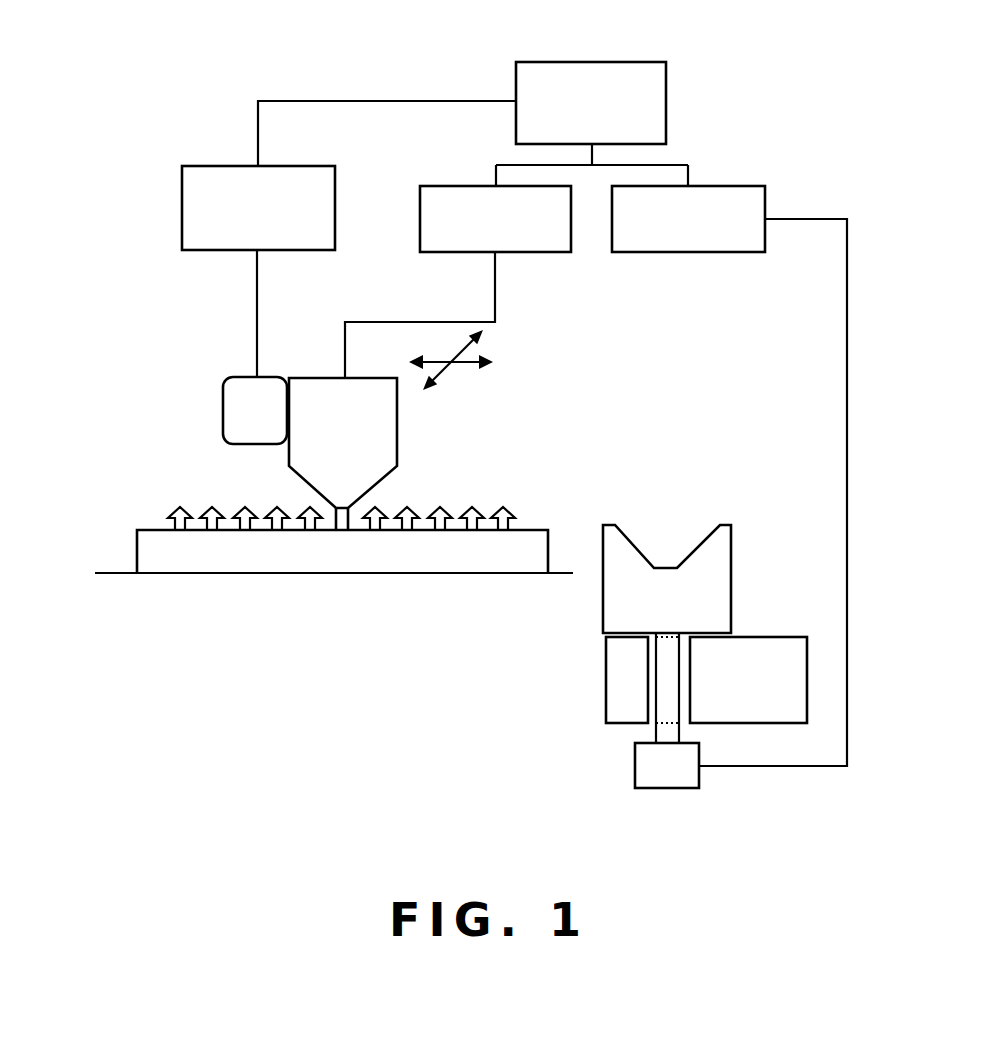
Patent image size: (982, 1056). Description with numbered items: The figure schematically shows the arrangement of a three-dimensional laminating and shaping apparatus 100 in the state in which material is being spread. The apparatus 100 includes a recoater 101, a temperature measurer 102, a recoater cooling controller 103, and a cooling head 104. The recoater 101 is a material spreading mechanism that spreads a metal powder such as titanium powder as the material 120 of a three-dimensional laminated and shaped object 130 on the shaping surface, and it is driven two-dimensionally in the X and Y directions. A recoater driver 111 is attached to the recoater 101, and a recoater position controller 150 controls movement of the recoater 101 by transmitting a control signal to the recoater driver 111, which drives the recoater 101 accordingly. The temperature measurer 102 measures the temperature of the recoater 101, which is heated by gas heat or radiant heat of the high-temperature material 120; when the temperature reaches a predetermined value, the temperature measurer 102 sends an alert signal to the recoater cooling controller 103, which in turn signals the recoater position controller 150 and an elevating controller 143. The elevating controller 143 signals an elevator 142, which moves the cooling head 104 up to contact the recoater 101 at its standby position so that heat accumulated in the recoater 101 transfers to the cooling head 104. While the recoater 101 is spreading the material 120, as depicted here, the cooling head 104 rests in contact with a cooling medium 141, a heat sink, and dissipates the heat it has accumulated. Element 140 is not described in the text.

The three-dimensional laminating and shaping apparatus 100 is at (151, 76).
The recoater 101 is at (397, 414).
The temperature measurer 102 is at (457, 186).
The recoater cooling controller 103 is at (591, 62).
The cooling head 104 is at (731, 573).
The recoater driver 111 is at (223, 409).
The material 120 is at (350, 508).
The three-dimensional laminated and shaped object 130 is at (152, 550).
The cooling air flow 140 is at (172, 512).
The cooling medium 141 is at (606, 672).
The elevator 142 is at (699, 777).
The elevating controller 143 is at (721, 186).
The recoater position controller 150 is at (217, 166).